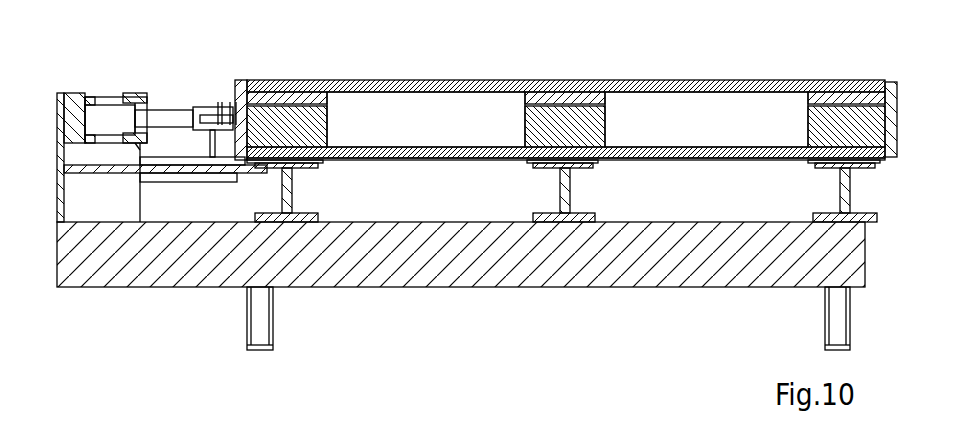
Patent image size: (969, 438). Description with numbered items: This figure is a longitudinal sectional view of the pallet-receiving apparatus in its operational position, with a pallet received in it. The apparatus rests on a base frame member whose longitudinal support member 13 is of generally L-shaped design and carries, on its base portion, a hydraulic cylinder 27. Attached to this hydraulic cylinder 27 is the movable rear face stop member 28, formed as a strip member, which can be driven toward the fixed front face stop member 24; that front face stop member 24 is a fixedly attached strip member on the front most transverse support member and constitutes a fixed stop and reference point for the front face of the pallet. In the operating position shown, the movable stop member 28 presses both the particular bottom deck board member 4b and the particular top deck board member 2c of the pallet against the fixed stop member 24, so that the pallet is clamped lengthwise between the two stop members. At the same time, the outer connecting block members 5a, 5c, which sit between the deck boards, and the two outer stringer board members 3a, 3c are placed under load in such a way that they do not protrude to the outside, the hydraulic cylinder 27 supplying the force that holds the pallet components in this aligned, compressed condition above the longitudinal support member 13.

The longitudinal support member 13 is at (517, 286).
The hydraulic cylinder 27 is at (108, 115).
The movable rear face stop member 28 is at (240, 80).
The top deck board member 2c is at (662, 85).
The outer stringer board member 3a is at (297, 92).
The outer connecting block member 5a is at (328, 125).
The outer connecting block member 5c is at (808, 124).
The outer stringer board member 3c is at (843, 98).
The front face stop member 24 is at (890, 90).
The bottom deck board member 4b is at (672, 161).